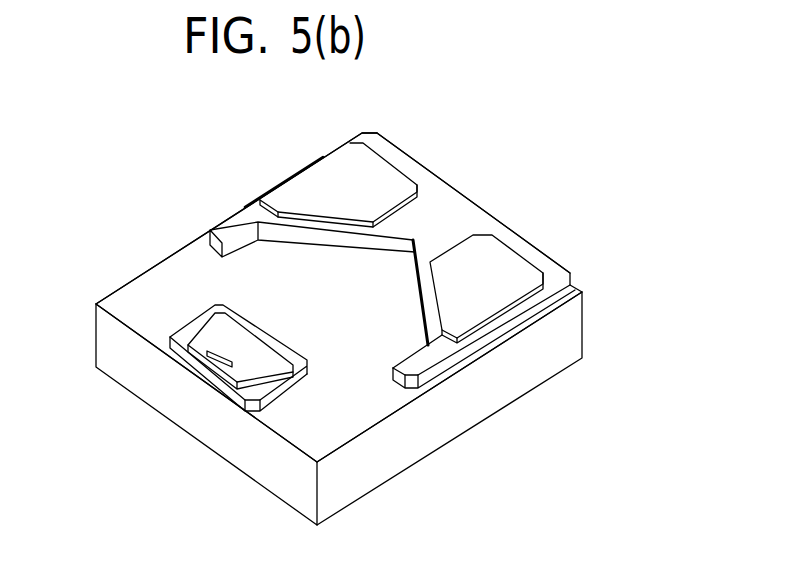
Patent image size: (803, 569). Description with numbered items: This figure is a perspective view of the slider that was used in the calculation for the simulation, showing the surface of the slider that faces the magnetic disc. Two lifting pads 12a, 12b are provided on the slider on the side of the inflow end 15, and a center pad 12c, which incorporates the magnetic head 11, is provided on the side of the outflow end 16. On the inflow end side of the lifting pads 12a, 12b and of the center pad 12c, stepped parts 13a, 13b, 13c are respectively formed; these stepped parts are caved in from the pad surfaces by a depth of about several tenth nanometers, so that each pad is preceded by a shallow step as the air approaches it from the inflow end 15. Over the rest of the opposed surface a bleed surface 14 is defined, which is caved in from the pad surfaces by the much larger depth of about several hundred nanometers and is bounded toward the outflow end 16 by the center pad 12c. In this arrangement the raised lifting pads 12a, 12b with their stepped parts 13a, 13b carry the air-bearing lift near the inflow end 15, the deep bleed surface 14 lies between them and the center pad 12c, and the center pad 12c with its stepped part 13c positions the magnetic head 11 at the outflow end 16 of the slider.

The magnetic head 11 is at (167, 370).
The lifting pad 12a is at (481, 290).
The lifting pad 12b is at (318, 183).
The center pad 12c is at (215, 330).
The stepped part 13a is at (532, 251).
The stepped part 13b is at (397, 154).
The stepped part 13c is at (262, 327).
The bleed surface 14 is at (337, 325).
The inflow end 15 is at (463, 196).
The outflow end 16 is at (215, 383).